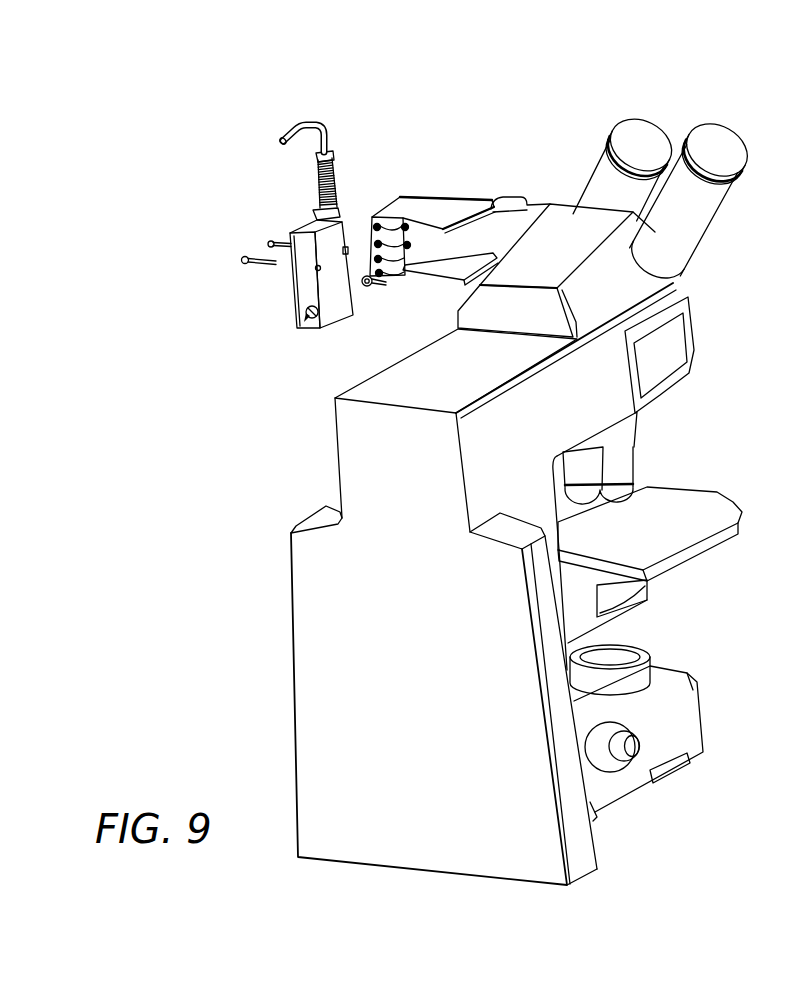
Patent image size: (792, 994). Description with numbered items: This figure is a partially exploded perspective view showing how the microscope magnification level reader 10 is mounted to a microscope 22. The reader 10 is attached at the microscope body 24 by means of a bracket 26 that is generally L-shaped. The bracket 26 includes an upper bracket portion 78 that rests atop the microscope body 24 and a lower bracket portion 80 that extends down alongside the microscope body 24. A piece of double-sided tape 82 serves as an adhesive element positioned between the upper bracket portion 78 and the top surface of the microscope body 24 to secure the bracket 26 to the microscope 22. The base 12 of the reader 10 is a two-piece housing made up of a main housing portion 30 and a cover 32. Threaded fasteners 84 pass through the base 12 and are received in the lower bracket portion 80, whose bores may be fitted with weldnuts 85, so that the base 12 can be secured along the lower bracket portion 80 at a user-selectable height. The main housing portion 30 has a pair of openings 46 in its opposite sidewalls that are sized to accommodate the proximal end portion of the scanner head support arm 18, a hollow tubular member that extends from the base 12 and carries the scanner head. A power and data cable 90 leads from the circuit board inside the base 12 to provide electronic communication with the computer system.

The microscope magnification level reader 10 is at (403, 110).
The base 12 is at (198, 298).
The scanner head support arm 18 is at (508, 197).
The microscope 22 is at (172, 565).
The microscope body 24 is at (365, 397).
The bracket 26 is at (423, 186).
The main housing portion 30 is at (333, 308).
The cover 32 is at (290, 291).
The openings 46 is at (304, 318).
The upper bracket portion 78 is at (441, 208).
The lower bracket portion 80 is at (384, 286).
The double-sided tape 82 is at (433, 282).
The threaded fasteners 84 is at (246, 259).
The weldnuts 85 is at (404, 222).
The power and data cable 90 is at (293, 139).